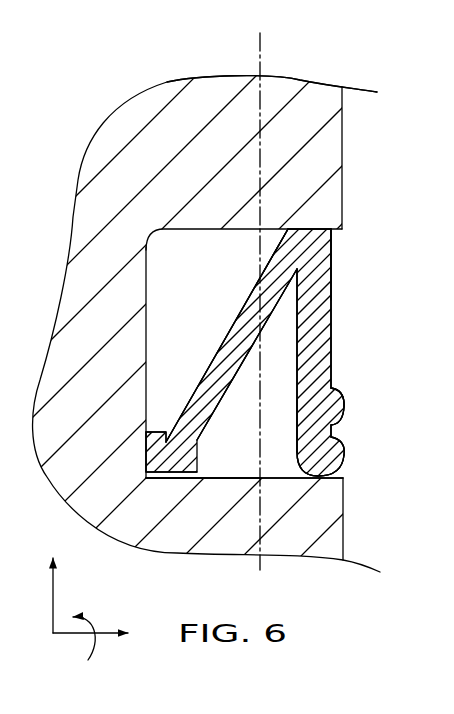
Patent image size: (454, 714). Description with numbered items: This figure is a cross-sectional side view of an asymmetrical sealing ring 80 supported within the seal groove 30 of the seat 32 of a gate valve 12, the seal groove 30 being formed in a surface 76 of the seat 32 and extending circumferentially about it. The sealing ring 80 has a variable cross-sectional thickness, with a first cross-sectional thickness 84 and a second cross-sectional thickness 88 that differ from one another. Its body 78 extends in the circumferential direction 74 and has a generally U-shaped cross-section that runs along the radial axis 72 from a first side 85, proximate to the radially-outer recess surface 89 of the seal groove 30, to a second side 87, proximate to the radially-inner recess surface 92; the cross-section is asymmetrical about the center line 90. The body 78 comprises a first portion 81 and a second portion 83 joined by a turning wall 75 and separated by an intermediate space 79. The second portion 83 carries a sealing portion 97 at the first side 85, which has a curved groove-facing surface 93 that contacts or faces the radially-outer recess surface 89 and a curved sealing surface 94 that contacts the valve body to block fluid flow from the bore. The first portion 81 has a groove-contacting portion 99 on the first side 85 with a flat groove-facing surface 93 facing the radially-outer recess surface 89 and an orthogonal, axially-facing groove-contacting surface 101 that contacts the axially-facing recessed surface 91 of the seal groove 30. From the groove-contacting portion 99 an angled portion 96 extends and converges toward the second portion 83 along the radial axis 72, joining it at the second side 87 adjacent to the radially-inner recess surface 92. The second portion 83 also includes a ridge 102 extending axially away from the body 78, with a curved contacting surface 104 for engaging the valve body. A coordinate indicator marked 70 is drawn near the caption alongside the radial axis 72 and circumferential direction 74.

The gate valve 12 is at (362, 75).
The seal groove 30 is at (348, 246).
The seat 32 is at (336, 95).
The first axis 70 is at (88, 638).
The radial axis 72 is at (55, 602).
The circumferential direction 74 is at (97, 618).
The turning wall 75 is at (310, 228).
The surface 76 is at (343, 138).
The body 78 is at (322, 325).
The intermediate space 79 is at (295, 430).
The sealing ring 80 is at (354, 300).
The first portion 81 is at (197, 383).
The second portion 83 is at (322, 264).
The first cross-sectional thickness 84 is at (333, 430).
The first side 85 is at (190, 481).
The second side 87 is at (278, 212).
The second cross-sectional thickness 88 is at (210, 352).
The radially-outer recess surface 89 is at (243, 474).
The center line 90 is at (259, 55).
The axially-facing recessed surface 91 is at (146, 319).
The radially-inner recess surface 92 is at (181, 229).
The groove-facing surface 93 is at (181, 480).
The sealing surface 94 is at (346, 452).
The angled portion 96 is at (207, 417).
The sealing portion 97 is at (336, 466).
The groove-contacting portion 99 is at (146, 455).
The groove-contacting surface 101 is at (146, 441).
The ridge 102 is at (338, 394).
The curved contacting surface 104 is at (338, 415).